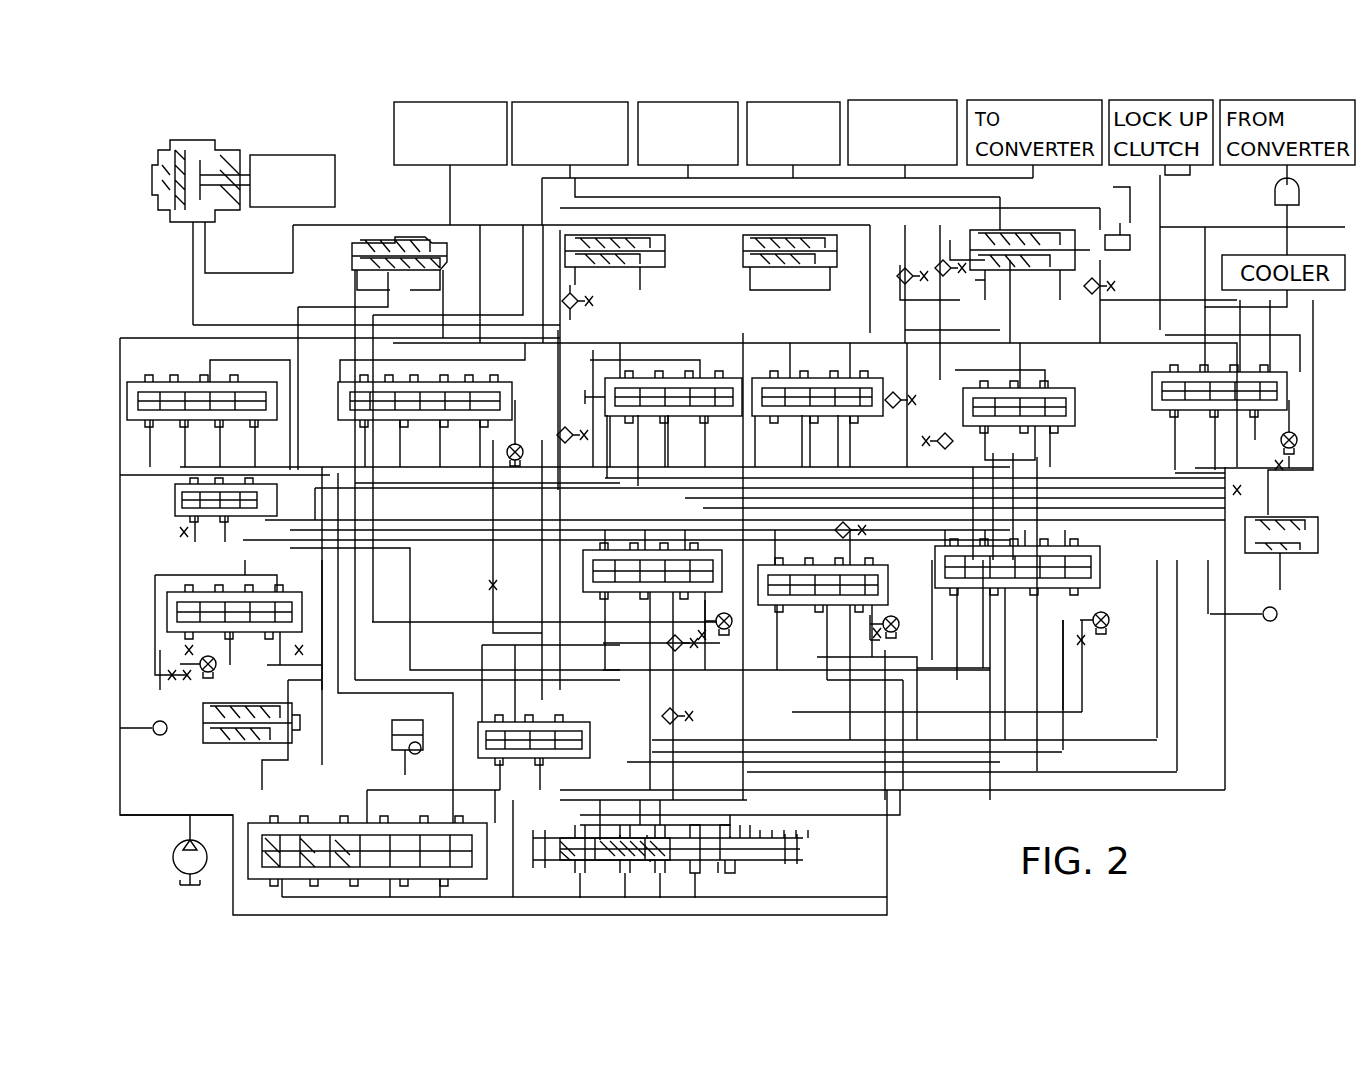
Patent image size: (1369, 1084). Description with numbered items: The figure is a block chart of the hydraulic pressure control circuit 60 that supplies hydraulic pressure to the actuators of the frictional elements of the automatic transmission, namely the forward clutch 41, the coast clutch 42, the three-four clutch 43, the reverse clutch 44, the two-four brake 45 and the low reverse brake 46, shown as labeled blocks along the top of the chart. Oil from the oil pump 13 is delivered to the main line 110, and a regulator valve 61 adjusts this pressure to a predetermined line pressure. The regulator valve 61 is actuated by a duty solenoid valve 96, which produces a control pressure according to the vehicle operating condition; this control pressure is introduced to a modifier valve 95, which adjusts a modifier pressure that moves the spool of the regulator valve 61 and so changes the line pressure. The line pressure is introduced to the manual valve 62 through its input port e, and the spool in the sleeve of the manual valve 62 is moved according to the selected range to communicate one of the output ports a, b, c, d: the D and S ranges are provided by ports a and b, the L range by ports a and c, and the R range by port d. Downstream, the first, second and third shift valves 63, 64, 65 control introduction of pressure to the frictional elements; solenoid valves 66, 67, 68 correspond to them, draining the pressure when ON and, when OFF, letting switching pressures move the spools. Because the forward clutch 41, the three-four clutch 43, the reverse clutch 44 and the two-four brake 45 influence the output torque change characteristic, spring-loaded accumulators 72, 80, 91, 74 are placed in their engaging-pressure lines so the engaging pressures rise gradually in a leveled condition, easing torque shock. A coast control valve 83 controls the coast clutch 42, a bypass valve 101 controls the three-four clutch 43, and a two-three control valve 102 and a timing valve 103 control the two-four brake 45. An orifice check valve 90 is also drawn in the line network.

The oil pump 13 is at (172, 860).
The forward clutch 41 is at (585, 102).
The coast clutch 42 is at (695, 102).
The 3-4 clutch 43 is at (795, 102).
The reverse clutch 44 is at (462, 102).
The 2-4 brake 45 is at (305, 155).
The low reverse brake 46 is at (906, 102).
The hydraulic pressure control circuit 60 is at (396, 205).
The regulator valve 61 is at (324, 820).
The manual valve 62 is at (818, 862).
The first shift valve 63 is at (584, 576).
The second shift valve 64 is at (796, 566).
The third shift valve 65 is at (1095, 566).
The solenoid valve 66 is at (730, 630).
The solenoid valve 67 is at (891, 615).
The solenoid valve 68 is at (1110, 628).
The accumulator 72 is at (743, 252).
The accumulator 74 is at (352, 262).
The accumulator 80 is at (1022, 270).
The coast control valve 83 is at (1040, 430).
The orifice check valve 90 is at (600, 303).
The accumulator 91 is at (665, 260).
The modifier valve 95 is at (285, 600).
The duty solenoid valve 96 is at (220, 664).
The bypass valve 101 is at (710, 416).
The 2-3 control valve 102 is at (790, 416).
The timing valve 103 is at (505, 375).
The main line 110 is at (205, 815).
The output port a is at (658, 836).
The output port b is at (700, 870).
The output port c is at (628, 834).
The output port d is at (728, 828).
The input port e is at (656, 872).